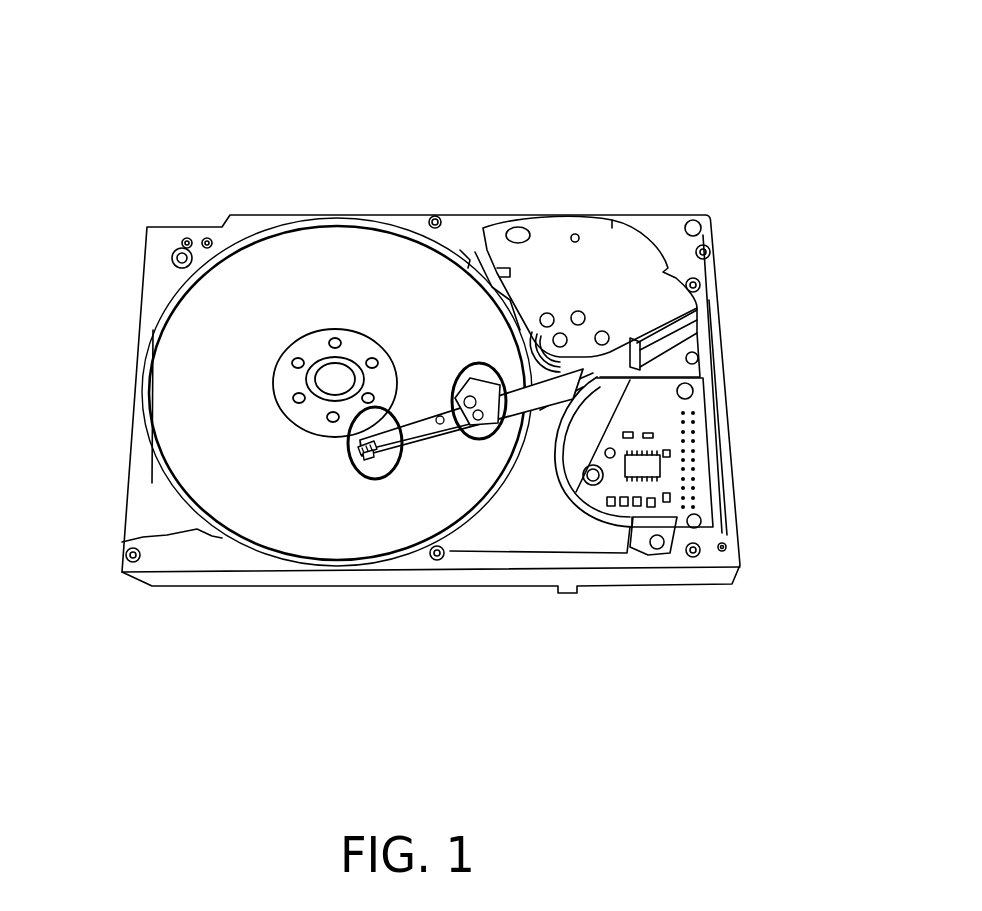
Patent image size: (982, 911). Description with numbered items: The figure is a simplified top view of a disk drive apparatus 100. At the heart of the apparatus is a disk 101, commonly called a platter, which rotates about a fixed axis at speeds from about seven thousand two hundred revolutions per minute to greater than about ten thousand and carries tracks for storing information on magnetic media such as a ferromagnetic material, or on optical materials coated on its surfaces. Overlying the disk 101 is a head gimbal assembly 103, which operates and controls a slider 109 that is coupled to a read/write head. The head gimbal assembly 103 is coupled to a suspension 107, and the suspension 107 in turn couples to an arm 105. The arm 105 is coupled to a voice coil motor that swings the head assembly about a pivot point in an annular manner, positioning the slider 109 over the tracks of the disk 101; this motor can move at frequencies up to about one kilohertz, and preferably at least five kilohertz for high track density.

The disk drive apparatus 100 is at (770, 97).
The disk 101 is at (190, 363).
The head gimbal assembly 103 is at (417, 417).
The arm 105 is at (508, 430).
The suspension 107 is at (426, 430).
The slider 109 is at (365, 455).